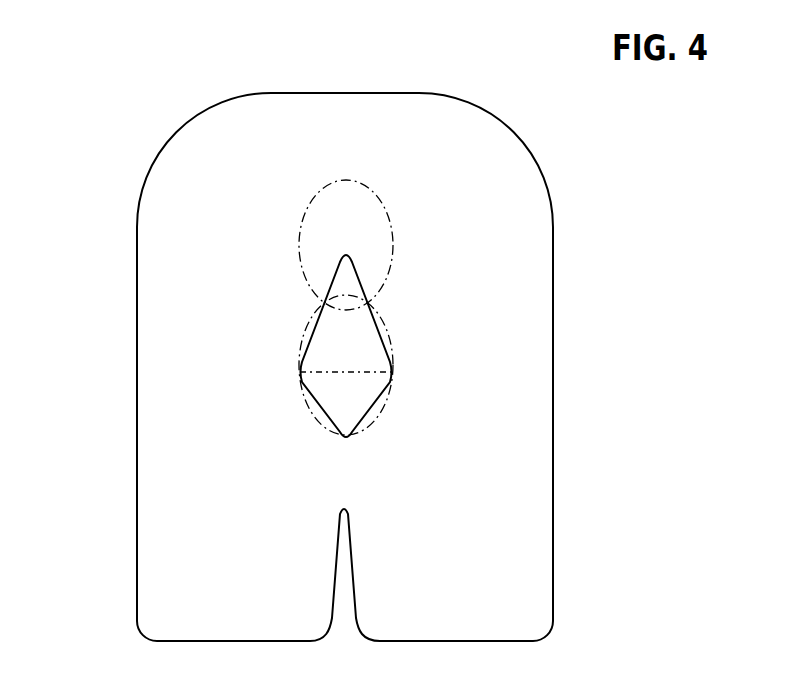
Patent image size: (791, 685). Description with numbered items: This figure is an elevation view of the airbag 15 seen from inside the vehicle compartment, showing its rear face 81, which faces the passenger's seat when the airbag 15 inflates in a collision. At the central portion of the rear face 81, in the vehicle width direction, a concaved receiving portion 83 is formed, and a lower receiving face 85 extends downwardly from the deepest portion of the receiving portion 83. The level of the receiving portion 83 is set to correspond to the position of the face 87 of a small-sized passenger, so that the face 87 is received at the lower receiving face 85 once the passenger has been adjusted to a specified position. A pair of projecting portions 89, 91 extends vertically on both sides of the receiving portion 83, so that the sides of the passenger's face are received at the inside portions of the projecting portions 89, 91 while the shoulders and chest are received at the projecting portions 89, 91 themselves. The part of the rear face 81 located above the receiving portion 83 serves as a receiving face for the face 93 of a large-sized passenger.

The airbag 15 is at (162, 109).
The rear face 81 is at (371, 142).
The receiving portion 83 is at (360, 272).
The lower receiving face 85 is at (348, 398).
The face of a small-sized passenger 87 is at (388, 330).
The projecting portion 89 is at (188, 352).
The projecting portion 91 is at (514, 359).
The face of a large-sized passenger 93 is at (380, 193).